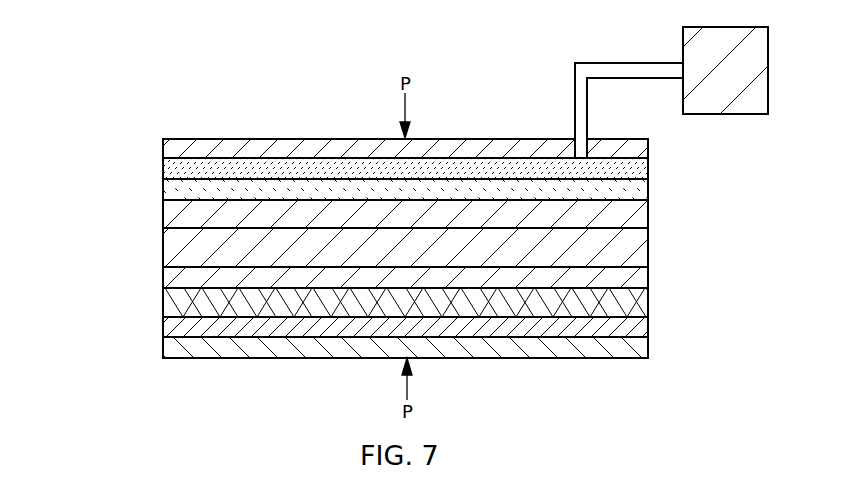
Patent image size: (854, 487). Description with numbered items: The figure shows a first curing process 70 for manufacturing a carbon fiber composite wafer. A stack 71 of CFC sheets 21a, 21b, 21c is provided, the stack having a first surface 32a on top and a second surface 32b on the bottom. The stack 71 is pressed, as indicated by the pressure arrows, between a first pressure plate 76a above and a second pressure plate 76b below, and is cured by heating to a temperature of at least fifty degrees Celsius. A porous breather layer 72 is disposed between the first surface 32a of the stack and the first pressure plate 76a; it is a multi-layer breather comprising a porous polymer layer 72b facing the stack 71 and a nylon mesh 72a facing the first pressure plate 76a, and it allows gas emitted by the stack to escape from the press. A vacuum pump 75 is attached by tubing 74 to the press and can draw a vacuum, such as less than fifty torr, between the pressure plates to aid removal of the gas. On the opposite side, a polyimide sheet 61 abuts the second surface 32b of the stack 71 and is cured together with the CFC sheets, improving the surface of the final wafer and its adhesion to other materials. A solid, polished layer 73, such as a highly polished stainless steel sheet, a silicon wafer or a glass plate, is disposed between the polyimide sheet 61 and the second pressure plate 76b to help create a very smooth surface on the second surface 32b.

The first curing process 70 is at (405, 219).
The stack 71 is at (431, 228).
The porous breather layer 72 is at (402, 146).
The nylon mesh 72a is at (163, 168).
The porous polymer layer 72b is at (165, 188).
The polished layer 73 is at (165, 325).
The tubing 74 is at (583, 63).
The vacuum pump 75 is at (757, 63).
The first pressure plate 76a is at (246, 147).
The second pressure plate 76b is at (223, 345).
The sheet of CFC 21a is at (640, 214).
The sheet of CFC 21b is at (637, 254).
The sheet of CFC 21c is at (640, 278).
The first surface 32a is at (163, 198).
The second surface 32b is at (650, 287).
The polyimide sheet 61 is at (173, 305).